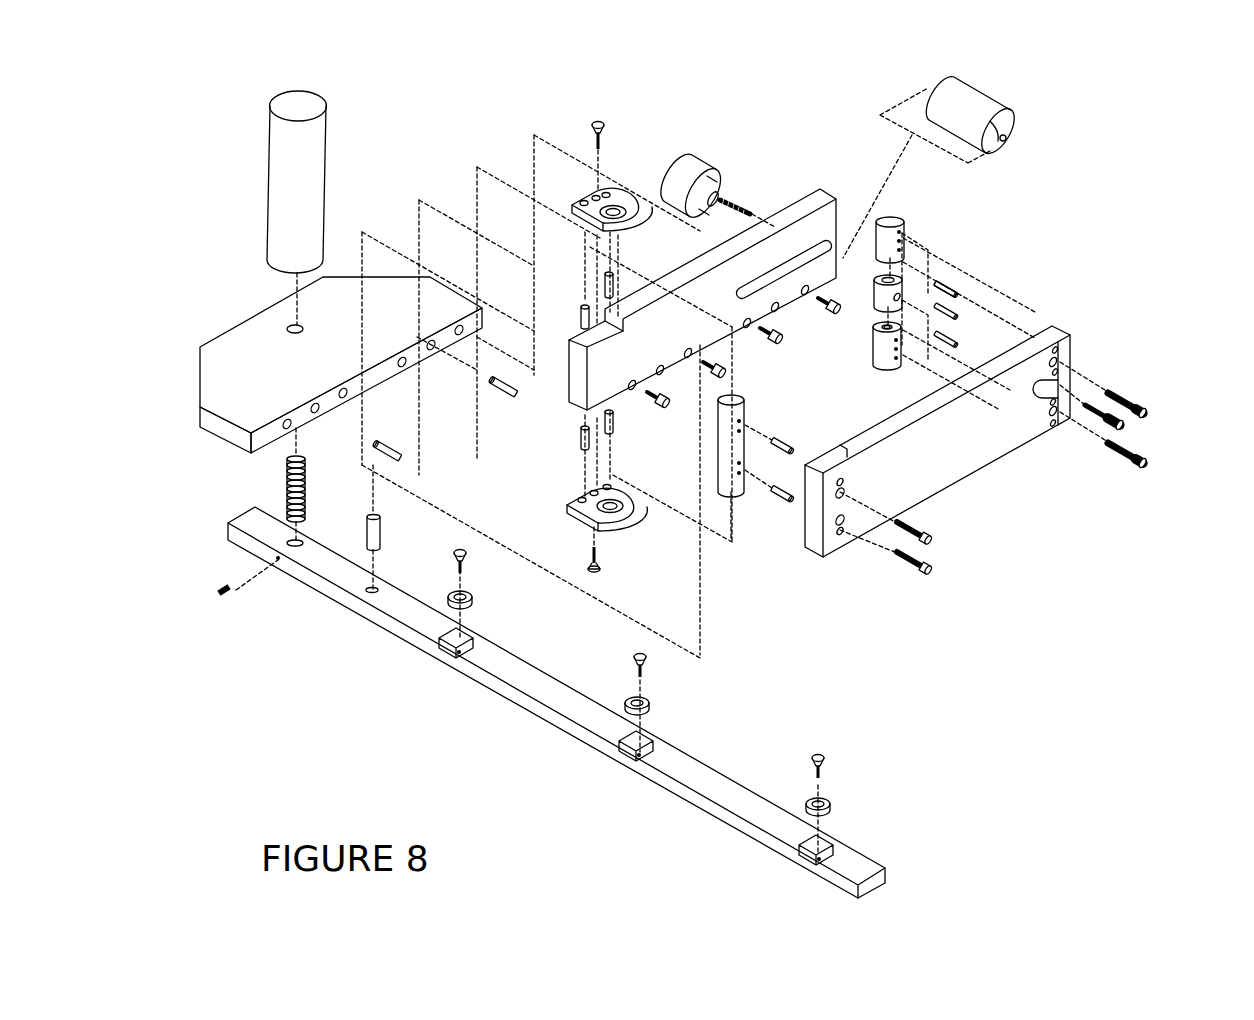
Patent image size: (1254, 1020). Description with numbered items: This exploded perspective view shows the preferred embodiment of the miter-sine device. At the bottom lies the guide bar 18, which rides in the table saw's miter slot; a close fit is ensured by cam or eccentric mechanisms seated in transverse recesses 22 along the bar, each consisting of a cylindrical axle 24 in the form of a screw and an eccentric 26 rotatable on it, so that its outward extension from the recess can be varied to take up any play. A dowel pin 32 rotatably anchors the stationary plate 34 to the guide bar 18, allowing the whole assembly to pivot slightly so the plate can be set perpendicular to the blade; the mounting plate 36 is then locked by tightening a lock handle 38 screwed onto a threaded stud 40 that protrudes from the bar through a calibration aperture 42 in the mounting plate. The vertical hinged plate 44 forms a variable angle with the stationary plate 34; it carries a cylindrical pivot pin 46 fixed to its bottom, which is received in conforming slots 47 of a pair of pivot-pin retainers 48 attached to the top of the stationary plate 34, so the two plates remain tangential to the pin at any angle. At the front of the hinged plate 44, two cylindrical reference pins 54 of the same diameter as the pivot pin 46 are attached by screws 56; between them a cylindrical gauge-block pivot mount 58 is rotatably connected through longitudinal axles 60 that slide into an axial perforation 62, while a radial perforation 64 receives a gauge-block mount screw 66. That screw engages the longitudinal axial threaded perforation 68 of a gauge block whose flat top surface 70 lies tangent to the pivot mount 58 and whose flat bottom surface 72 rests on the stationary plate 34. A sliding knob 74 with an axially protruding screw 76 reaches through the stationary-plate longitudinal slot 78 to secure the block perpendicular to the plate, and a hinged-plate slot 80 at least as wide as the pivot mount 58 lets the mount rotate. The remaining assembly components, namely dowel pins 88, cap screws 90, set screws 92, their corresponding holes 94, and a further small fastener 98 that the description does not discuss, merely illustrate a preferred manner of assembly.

The guide bar 18 is at (747, 803).
The transverse recess 22 is at (445, 648).
The cylindrical axle 24 is at (466, 566).
The eccentric 26 is at (473, 602).
The dowel pin 32 is at (382, 532).
The stationary plate 34 is at (823, 200).
The mounting plate 36 is at (248, 338).
The lock handle 38 is at (300, 108).
The threaded stud 40 is at (287, 470).
The calibration aperture 42 is at (300, 327).
The hinged plate 44 is at (1050, 333).
The pivot pin 46 is at (746, 405).
The conforming slot 47 is at (626, 220).
The pivot-pin retainer 48 is at (618, 197).
The reference pin 54 is at (893, 223).
The screw 56 is at (1145, 408).
The gauge-block pivot mount 58 is at (894, 297).
The longitudinal axle 60 is at (880, 325).
The axial perforation 62 is at (887, 281).
The radial perforation 64 is at (923, 290).
The gauge-block mount screw 66 is at (1128, 428).
The longitudinal axial threaded perforation 68 is at (1008, 139).
The top surface 70 is at (940, 96).
The bottom surface 72 is at (1000, 128).
The sliding knob 74 is at (700, 172).
The axially protruding screw 76 is at (747, 198).
The stationary-plate longitudinal slot 78 is at (762, 292).
The hinged-plate slot 80 is at (1048, 390).
The dowel pin 88 is at (517, 398).
The cap screw 90 is at (836, 316).
The set screw 92 is at (230, 596).
The hole 94 is at (316, 404).
The screw 98 is at (603, 123).